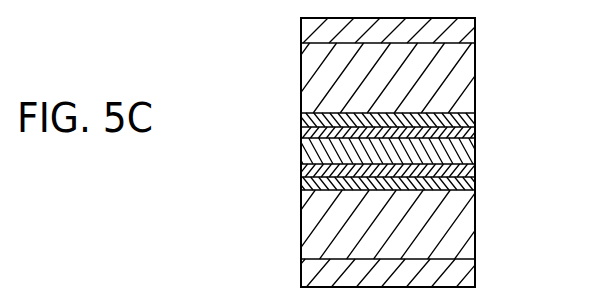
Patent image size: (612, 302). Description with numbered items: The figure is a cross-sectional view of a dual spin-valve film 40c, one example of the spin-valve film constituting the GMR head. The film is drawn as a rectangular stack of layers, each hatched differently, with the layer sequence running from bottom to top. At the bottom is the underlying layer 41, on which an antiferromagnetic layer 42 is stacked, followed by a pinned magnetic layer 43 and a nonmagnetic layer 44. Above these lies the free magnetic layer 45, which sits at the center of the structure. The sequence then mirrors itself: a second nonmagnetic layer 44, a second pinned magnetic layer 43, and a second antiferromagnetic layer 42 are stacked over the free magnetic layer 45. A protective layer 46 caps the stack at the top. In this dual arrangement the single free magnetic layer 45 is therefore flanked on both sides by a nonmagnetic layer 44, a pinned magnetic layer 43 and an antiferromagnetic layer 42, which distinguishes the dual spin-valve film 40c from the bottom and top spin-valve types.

The dual spin-valve film 40c is at (291, 127).
The underlying layer 41 is at (475, 268).
The antiferromagnetic layer 42 is at (475, 72).
The pinned magnetic layer 43 is at (475, 118).
The nonmagnetic layer 44 is at (475, 133).
The free magnetic layer 45 is at (475, 152).
The protective layer 46 is at (475, 28).